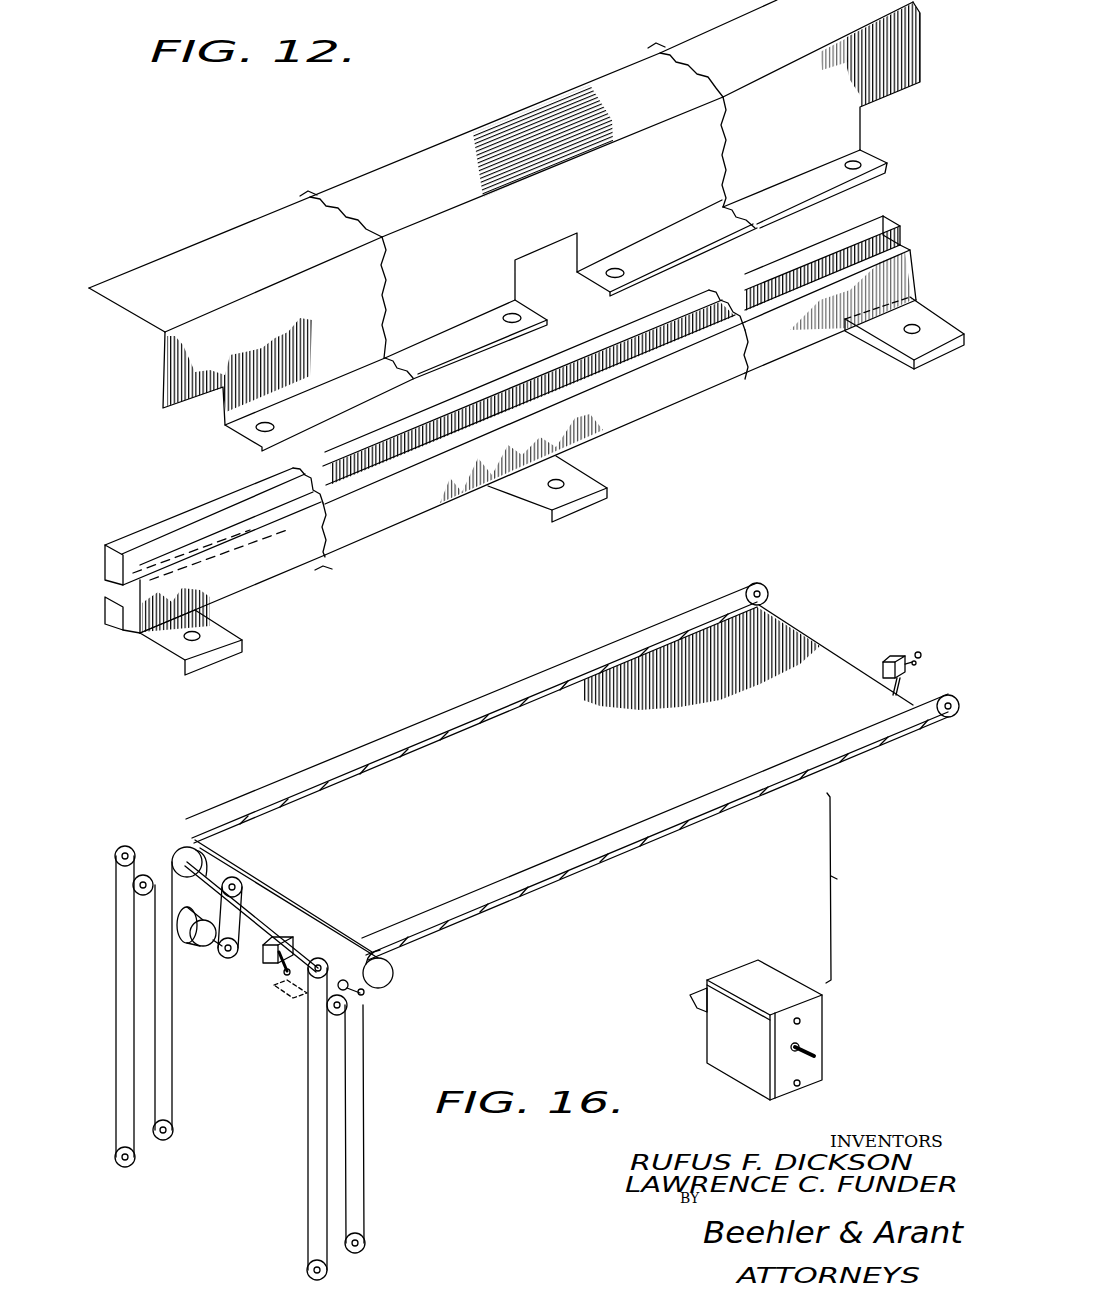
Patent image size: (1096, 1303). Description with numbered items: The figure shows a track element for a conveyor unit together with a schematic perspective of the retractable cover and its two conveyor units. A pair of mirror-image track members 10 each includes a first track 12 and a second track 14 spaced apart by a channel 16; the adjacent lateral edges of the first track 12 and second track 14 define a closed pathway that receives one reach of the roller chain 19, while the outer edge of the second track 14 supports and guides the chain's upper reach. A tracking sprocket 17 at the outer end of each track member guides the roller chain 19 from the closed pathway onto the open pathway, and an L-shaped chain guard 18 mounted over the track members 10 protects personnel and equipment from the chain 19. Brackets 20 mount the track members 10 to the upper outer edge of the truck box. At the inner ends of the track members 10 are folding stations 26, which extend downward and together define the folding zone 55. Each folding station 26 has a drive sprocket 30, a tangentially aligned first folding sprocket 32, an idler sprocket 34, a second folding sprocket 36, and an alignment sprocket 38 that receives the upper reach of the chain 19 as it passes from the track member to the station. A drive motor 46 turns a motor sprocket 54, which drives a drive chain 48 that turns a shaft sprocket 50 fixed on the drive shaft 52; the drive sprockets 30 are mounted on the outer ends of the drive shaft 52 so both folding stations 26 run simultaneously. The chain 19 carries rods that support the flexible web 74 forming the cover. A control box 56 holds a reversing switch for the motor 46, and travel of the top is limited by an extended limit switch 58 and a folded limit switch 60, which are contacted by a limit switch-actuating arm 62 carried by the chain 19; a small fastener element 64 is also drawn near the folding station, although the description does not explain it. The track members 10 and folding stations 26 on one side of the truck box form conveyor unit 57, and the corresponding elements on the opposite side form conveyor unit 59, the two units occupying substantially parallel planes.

In FIG. 16, the track members 10 is at (648, 620).
In FIG. 12, the first track 12 is at (124, 649).
In FIG. 12, the second track 14 is at (502, 400).
In FIG. 12, the channel 16 is at (270, 575).
In FIG. 16, the tracking sprocket 17 is at (856, 670).
In FIG. 12, the L-shaped chain guard 18 is at (504, 225).
In FIG. 16, the roller chain 19 is at (494, 687).
In FIG. 12, the brackets 20 is at (202, 660).
In FIG. 16, the folding stations 26 is at (297, 1218).
In FIG. 16, the drive sprocket 30 is at (421, 991).
In FIG. 16, the first folding sprocket 32 is at (171, 1140).
In FIG. 16, the idler sprocket 34 is at (390, 1041).
In FIG. 16, the second folding sprocket 36 is at (132, 1164).
In FIG. 16, the alignment sprocket 38 is at (367, 905).
In FIG. 16, the drive motor 46 is at (200, 952).
In FIG. 16, the drive chain 48 is at (290, 915).
In FIG. 16, the shaft sprocket 50 is at (240, 880).
In FIG. 16, the drive shaft 52 is at (322, 957).
In FIG. 16, the motor sprocket 54 is at (235, 958).
In FIG. 16, the folding zone 55 is at (243, 1122).
In FIG. 16, the control box 56 is at (823, 1013).
In FIG. 16, the conveyor unit 57 is at (470, 925).
In FIG. 16, the extended limit switch 58 is at (893, 657).
In FIG. 16, the conveyor unit 59 is at (340, 743).
In FIG. 16, the folded limit switch 60 is at (266, 963).
In FIG. 16, the limit switch-actuating arm 62 is at (284, 990).
In FIG. 16, the fastener 64 is at (356, 995).
In FIG. 16, the flexible web 74 is at (701, 673).